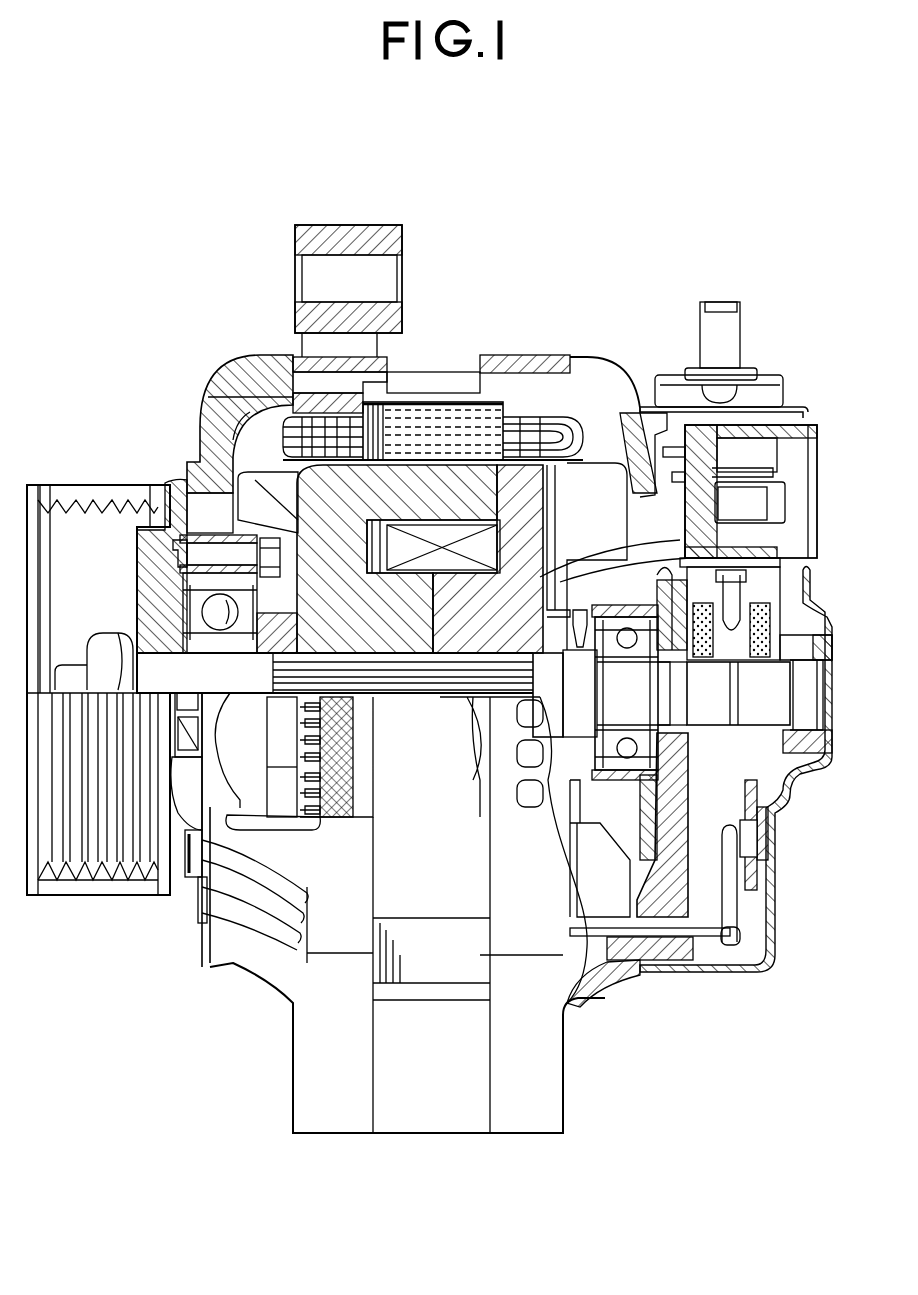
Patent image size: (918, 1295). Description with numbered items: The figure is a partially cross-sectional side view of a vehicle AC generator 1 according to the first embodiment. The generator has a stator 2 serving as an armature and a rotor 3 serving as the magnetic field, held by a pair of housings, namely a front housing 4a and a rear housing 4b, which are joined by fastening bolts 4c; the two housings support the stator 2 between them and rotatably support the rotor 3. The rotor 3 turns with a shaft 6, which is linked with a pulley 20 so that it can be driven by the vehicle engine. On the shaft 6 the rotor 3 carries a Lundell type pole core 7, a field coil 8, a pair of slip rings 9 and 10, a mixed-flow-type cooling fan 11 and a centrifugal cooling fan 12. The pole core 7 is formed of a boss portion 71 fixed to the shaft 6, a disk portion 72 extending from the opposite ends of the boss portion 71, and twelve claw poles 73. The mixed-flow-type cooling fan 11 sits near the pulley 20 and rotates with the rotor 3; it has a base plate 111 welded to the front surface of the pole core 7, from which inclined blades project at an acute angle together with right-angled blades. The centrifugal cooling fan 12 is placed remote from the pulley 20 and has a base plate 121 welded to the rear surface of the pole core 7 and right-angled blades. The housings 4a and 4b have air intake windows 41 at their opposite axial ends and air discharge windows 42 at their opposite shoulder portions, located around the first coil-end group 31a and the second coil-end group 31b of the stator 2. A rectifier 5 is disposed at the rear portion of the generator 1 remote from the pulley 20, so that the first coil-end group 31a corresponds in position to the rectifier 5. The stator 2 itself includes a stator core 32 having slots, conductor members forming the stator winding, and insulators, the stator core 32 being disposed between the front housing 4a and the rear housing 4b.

The vehicle AC generator 1 is at (618, 250).
The stator 2 is at (589, 404).
The rotor 3 is at (265, 450).
The front housing 4a is at (317, 360).
The rear housing 4b is at (547, 360).
The fastening bolts 4c is at (383, 333).
The rectifier 5 is at (750, 837).
The shaft 6 is at (133, 633).
The Lundell type pole core 7 is at (577, 493).
The field coil 8 is at (443, 530).
The slip ring 9 is at (713, 685).
The slip ring 10 is at (760, 713).
The mixed-flow-type cooling fan 11 is at (250, 493).
The centrifugal cooling fan 12 is at (603, 528).
The pulley 20 is at (90, 503).
The first coil-end group 31a is at (528, 417).
The second coil-end group 31b is at (297, 417).
The stator core 32 is at (443, 410).
The air intake windows 41 is at (205, 513).
The air discharge windows 42 is at (260, 833).
The boss portion 71 is at (693, 543).
The disk portion 72 is at (232, 455).
The claw poles 73 is at (393, 380).
The base plate 111 is at (177, 560).
The base plate 121 is at (700, 603).